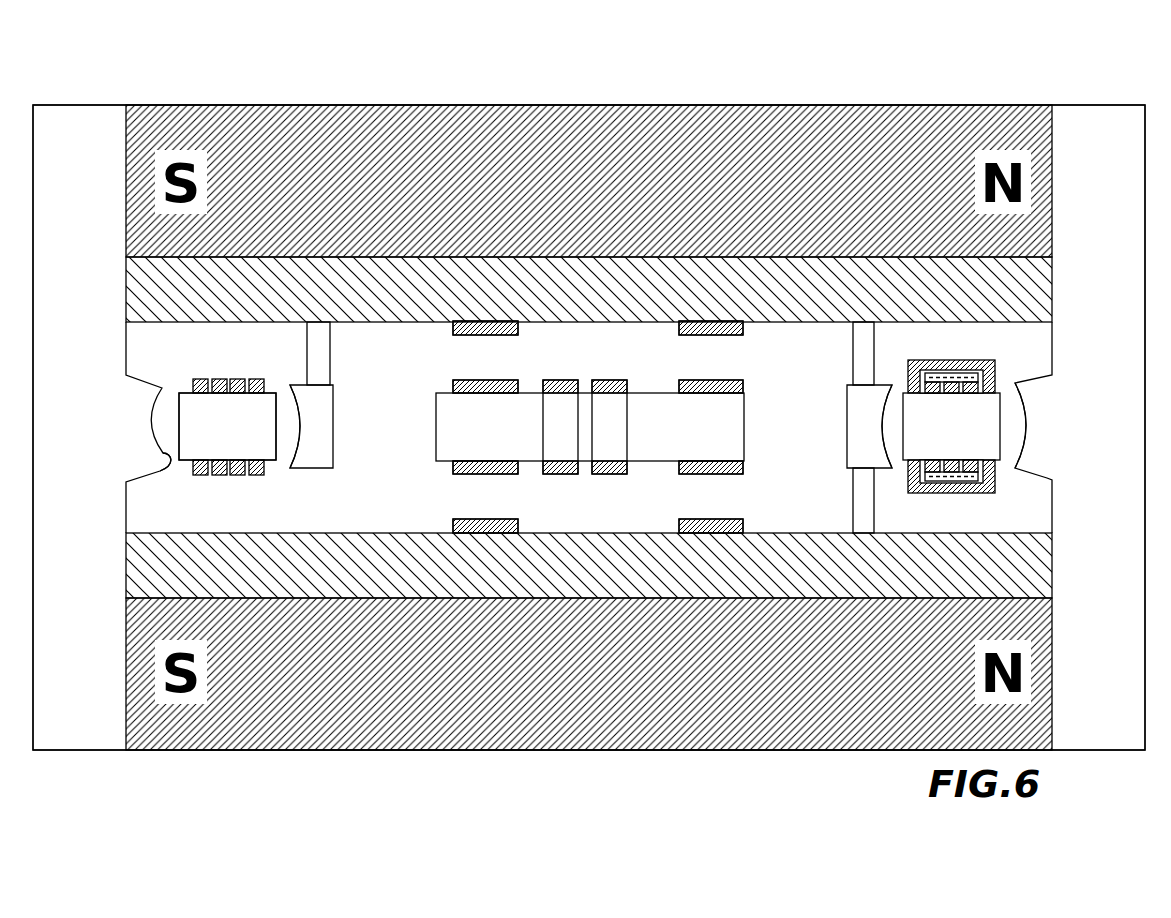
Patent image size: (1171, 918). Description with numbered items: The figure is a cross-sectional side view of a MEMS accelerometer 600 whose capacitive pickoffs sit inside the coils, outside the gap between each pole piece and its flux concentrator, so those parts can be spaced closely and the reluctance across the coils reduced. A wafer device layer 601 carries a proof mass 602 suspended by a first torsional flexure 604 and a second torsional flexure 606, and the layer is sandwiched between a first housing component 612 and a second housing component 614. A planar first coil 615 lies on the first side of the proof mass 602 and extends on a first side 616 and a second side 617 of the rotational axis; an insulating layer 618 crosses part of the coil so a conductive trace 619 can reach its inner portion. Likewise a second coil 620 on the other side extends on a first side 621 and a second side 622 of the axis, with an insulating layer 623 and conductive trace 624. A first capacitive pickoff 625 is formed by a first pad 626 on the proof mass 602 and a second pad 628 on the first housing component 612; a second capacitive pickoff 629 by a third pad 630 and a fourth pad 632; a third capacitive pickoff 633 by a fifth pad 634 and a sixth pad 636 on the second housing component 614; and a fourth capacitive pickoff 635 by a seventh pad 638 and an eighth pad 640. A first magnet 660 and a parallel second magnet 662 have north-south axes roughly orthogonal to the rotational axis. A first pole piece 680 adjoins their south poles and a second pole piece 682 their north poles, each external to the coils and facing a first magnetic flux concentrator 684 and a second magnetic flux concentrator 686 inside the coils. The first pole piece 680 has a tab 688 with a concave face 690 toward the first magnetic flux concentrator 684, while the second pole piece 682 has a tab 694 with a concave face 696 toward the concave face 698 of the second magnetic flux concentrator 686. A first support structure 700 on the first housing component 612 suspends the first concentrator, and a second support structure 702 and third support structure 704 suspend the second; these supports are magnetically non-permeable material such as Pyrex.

The MEMS accelerometer 600 is at (1108, 97).
The wafer device layer 601 is at (176, 422).
The proof mass 602 is at (214, 437).
The first torsional flexure 604 is at (550, 424).
The second torsional flexure 606 is at (620, 424).
The first housing component 612 is at (594, 298).
The second housing component 614 is at (594, 577).
The first coil 615 is at (232, 374).
The first side of rotational axis 616 is at (255, 374).
The second side of rotational axis 617 is at (979, 387).
The insulating layer 618 is at (952, 375).
The conductive trace 619 is at (932, 375).
The second coil 620 is at (255, 479).
The first side of rotational axis 621 is at (232, 479).
The second side of rotational axis 622 is at (979, 466).
The insulating layer 623 is at (952, 483).
The conductive trace 624 is at (932, 493).
The first capacitive pickoff 625 is at (480, 351).
The first pad 626 is at (453, 387).
The second pad 628 is at (453, 330).
The second capacitive pickoff 629 is at (731, 353).
The third pad 630 is at (735, 380).
The fourth pad 632 is at (735, 335).
The third capacitive pickoff 633 is at (480, 503).
The fifth pad 634 is at (453, 466).
The fourth capacitive pickoff 635 is at (727, 502).
The sixth pad 636 is at (453, 524).
The seventh pad 638 is at (735, 474).
The eighth pad 640 is at (735, 519).
The first magnet 660 is at (608, 105).
The second magnet 662 is at (610, 750).
The first pole piece 680 is at (90, 750).
The second pole piece 682 is at (1092, 750).
The first magnetic flux concentrator 684 is at (333, 468).
The second magnetic flux concentrator 686 is at (847, 462).
The tab 688 is at (150, 473).
The concave face 690 is at (168, 458).
The tab 694 is at (1047, 478).
The concave face 696 is at (295, 450).
The concave face 698 is at (880, 437).
The first support structure 700 is at (330, 357).
The second support structure 702 is at (853, 357).
The third support structure 704 is at (853, 500).